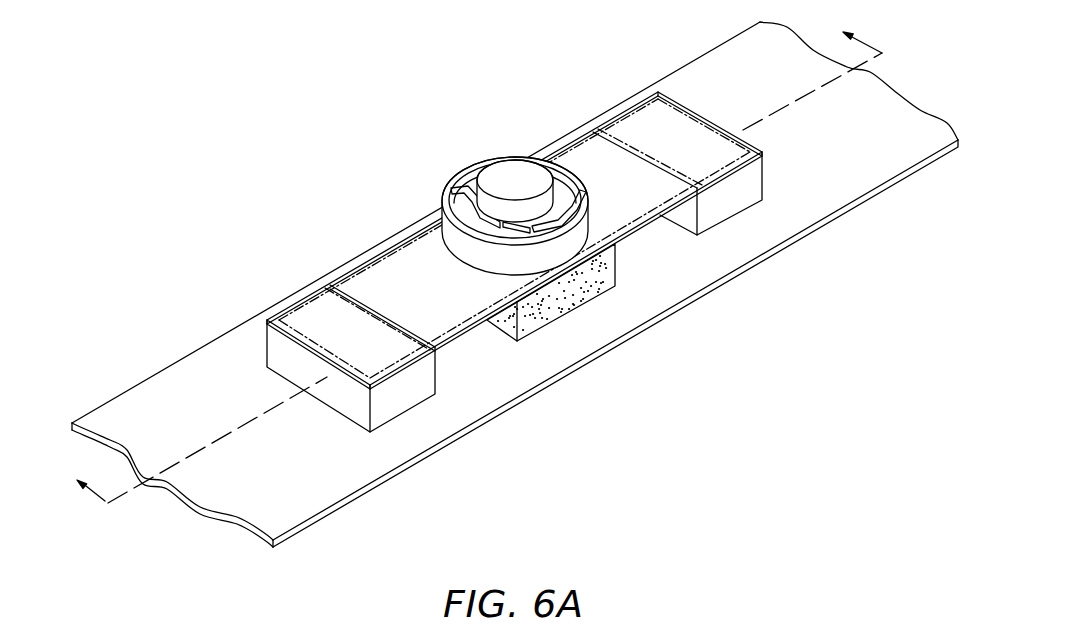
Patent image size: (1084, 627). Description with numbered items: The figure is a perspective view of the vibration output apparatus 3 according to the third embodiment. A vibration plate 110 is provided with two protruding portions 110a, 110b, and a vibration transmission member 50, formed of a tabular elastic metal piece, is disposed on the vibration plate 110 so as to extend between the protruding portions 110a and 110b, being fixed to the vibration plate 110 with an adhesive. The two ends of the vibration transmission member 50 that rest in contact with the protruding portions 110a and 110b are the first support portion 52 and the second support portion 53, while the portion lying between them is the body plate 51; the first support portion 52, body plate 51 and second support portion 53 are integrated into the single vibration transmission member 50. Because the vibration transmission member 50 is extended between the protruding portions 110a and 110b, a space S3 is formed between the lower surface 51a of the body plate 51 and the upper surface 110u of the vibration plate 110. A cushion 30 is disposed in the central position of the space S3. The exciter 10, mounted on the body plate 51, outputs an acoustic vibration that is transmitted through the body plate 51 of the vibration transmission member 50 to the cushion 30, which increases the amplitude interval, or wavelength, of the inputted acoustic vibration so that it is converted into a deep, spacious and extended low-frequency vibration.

The vibration output apparatus 3 is at (511, 217).
The exciter 10 is at (469, 150).
The cushion 30 is at (563, 298).
The vibration transmission member 50 is at (511, 217).
The body plate 51 is at (582, 158).
The lower surface of the body plate 51a is at (473, 320).
The first support portion 52 is at (330, 327).
The second support portion 53 is at (637, 130).
The vibration plate 110 is at (501, 273).
The protruding portion 110a is at (353, 400).
The protruding portion 110b is at (750, 181).
The upper surface of the vibration plate 110u is at (455, 366).
The space S3 is at (668, 260).